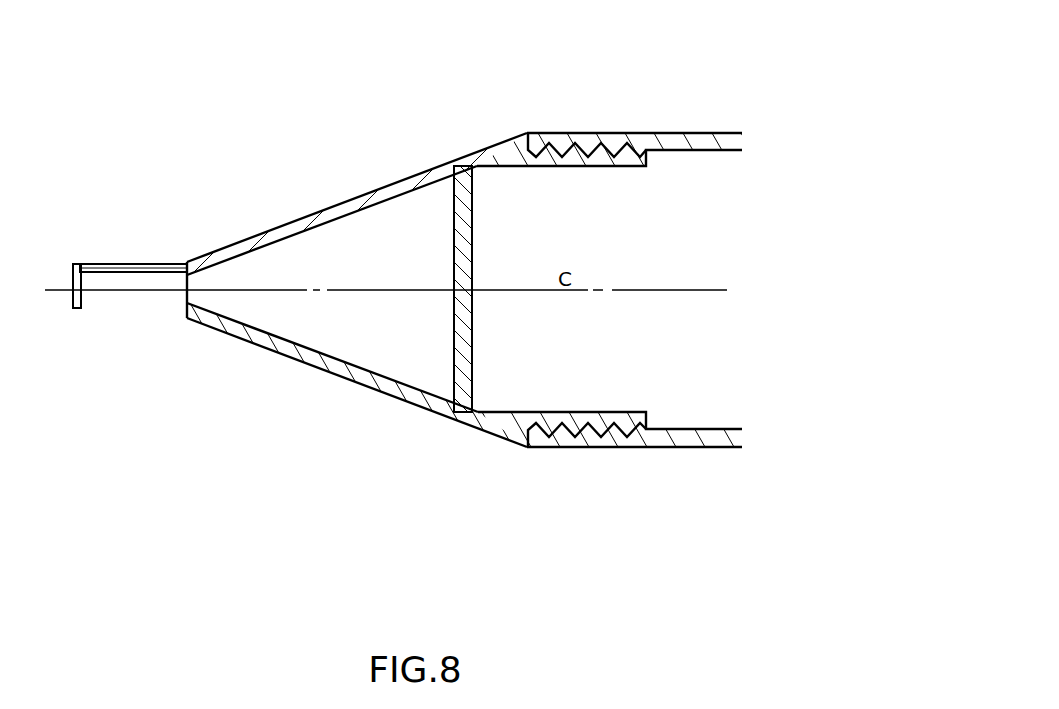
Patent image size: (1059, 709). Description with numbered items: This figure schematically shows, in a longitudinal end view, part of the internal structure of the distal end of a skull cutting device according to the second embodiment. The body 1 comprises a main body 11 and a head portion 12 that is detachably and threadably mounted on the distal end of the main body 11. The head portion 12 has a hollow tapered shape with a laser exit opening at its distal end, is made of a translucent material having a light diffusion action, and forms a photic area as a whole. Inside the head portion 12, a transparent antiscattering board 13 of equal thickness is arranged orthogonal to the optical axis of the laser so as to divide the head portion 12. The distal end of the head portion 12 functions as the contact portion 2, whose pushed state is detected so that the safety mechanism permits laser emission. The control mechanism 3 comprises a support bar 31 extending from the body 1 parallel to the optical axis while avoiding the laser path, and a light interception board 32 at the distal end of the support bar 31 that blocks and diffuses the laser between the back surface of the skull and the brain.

The body 1 is at (482, 131).
The main body 11 is at (643, 133).
The head portion 12 is at (378, 187).
The transparent antiscattering board 13 is at (472, 322).
The contact portion 2 is at (185, 310).
The control mechanism 3 is at (117, 170).
The support bar 31 is at (103, 263).
The light interception board 32 is at (72, 283).